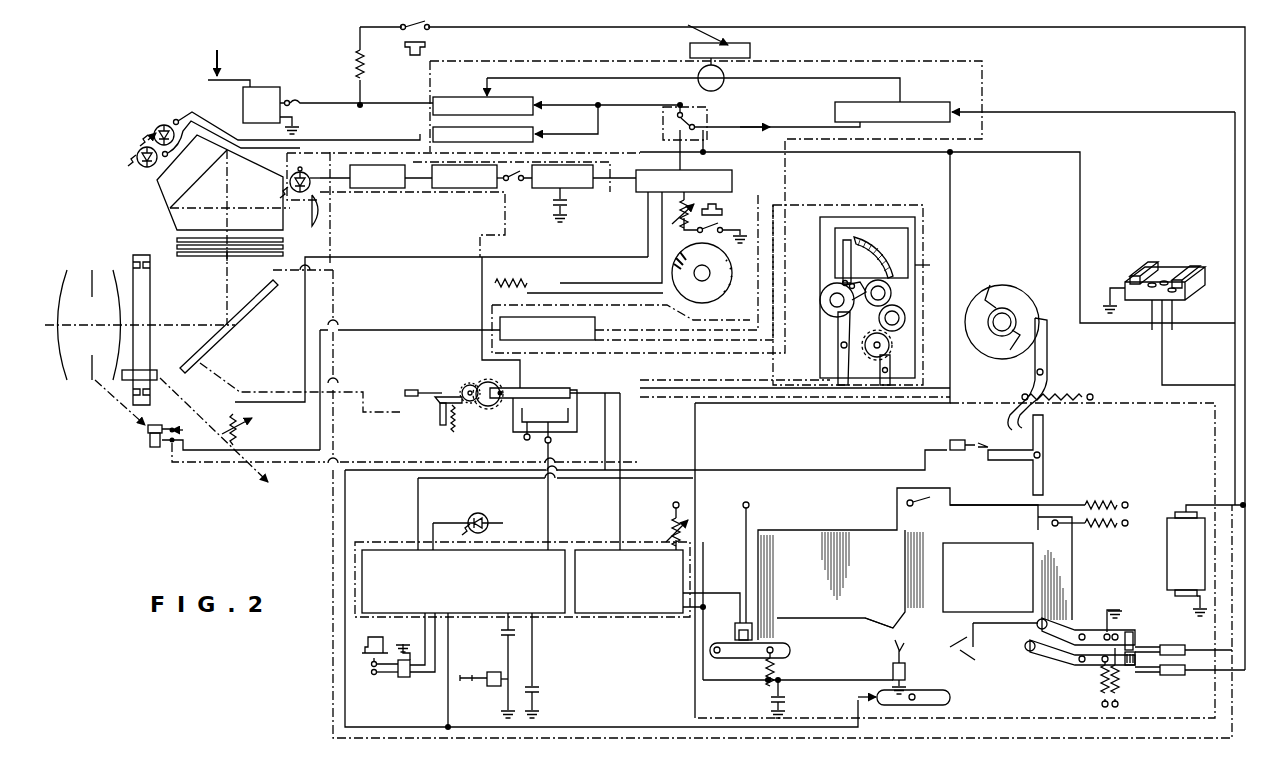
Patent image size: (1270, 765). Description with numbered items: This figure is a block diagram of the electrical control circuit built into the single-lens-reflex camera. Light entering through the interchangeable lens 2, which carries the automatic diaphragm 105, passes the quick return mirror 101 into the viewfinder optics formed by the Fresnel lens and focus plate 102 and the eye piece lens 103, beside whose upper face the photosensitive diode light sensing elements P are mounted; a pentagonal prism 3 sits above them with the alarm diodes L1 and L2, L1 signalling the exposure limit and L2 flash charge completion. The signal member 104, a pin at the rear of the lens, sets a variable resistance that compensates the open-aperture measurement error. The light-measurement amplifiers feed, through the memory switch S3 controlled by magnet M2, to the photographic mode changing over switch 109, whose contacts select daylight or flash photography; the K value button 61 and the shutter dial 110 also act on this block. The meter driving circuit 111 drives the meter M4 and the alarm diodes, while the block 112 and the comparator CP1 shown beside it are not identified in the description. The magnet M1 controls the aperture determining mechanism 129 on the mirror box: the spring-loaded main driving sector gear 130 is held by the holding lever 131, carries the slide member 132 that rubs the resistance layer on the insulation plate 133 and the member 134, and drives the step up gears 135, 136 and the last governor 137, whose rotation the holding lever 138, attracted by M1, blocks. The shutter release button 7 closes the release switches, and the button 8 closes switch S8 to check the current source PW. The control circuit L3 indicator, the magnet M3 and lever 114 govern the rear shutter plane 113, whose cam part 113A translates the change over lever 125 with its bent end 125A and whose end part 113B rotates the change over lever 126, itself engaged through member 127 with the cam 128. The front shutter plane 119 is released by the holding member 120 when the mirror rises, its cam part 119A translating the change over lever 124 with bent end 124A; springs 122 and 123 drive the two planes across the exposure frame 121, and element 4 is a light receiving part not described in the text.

The interchangeable lens 2 is at (77, 372).
The pentaprism 3 is at (165, 190).
The light receiving element 4 is at (1150, 262).
The shutter release button 7 is at (376, 641).
The button for checking the current source voltage 8 is at (422, 46).
The K value button 61 is at (717, 208).
The quick return mirror 101 is at (258, 301).
The Fresnel lens 102 is at (205, 248).
The eye piece lens 103 is at (324, 218).
The signal member 104 is at (138, 380).
The automatic diaphragm 105 is at (92, 276).
The photographic mode changing over switch 109 is at (704, 114).
The shutter dial 110 is at (730, 292).
The meter driving circuit 111 is at (458, 100).
The oscillator and comparator OS2+CP2 112 is at (435, 134).
The rear shutter plane 113 is at (820, 533).
The cam part of the rear shutter plane 113A is at (887, 620).
The end part of the rear shutter plane 113B is at (922, 494).
The lever 114 is at (744, 662).
The front shutter plane 119 is at (976, 663).
The cam part of the front shutter plane 119A is at (972, 637).
The front shutter plane holding member 120 is at (953, 700).
The exposure frame 121 is at (988, 577).
The driving spring for the rear shutter plane 122 is at (1039, 490).
The driving spring for the front shutter plane 123 is at (1105, 525).
The change over lever 124 is at (1049, 656).
The bent end of change over lever 124 124A is at (1138, 668).
The change over lever 125 is at (1079, 629).
The bent end of change over lever 125 125A is at (1132, 630).
The change over lever 126 is at (1042, 475).
The cam-engaging member 127 is at (1042, 345).
The cam 128 is at (1032, 306).
The aperture determining mechanism 129 is at (842, 217).
The main driving sector gear 130 is at (820, 303).
The holding lever 131 is at (838, 363).
The slide member 132 is at (842, 262).
The insulation plate 133 is at (908, 236).
The arcuate member 134 is at (875, 243).
The step up gear 135 is at (893, 294).
The step up gear 136 is at (905, 320).
The last governor (escape wheel) 137 is at (892, 346).
The holding lever 138 is at (890, 372).
The illuminating diode L1 is at (159, 126).
The illuminating diode L2 is at (144, 149).
The illuminating diode L3 is at (468, 518).
The magnet M1 is at (231, 451).
The magnet M2 is at (557, 470).
The magnet M3 is at (734, 632).
The meter M4 is at (338, 110).
The photosensitive diode light sensing element P is at (460, 172).
The memory switch S3 is at (518, 189).
The switch S8 is at (800, 335).
The comparator CP1 is at (594, 322).
The current source PW is at (1167, 552).